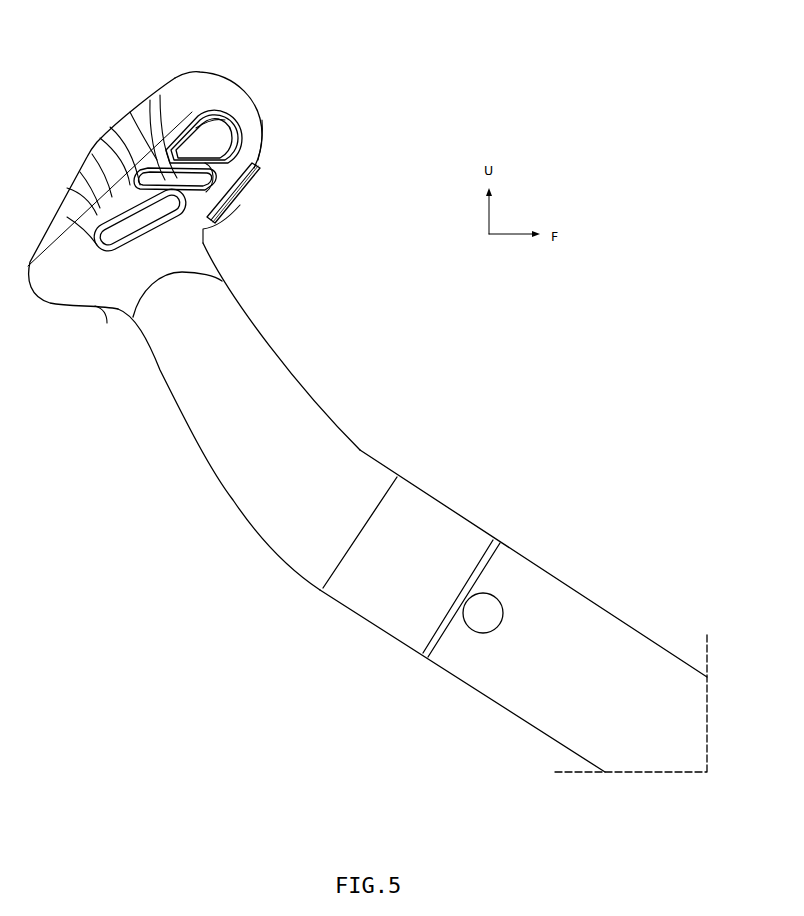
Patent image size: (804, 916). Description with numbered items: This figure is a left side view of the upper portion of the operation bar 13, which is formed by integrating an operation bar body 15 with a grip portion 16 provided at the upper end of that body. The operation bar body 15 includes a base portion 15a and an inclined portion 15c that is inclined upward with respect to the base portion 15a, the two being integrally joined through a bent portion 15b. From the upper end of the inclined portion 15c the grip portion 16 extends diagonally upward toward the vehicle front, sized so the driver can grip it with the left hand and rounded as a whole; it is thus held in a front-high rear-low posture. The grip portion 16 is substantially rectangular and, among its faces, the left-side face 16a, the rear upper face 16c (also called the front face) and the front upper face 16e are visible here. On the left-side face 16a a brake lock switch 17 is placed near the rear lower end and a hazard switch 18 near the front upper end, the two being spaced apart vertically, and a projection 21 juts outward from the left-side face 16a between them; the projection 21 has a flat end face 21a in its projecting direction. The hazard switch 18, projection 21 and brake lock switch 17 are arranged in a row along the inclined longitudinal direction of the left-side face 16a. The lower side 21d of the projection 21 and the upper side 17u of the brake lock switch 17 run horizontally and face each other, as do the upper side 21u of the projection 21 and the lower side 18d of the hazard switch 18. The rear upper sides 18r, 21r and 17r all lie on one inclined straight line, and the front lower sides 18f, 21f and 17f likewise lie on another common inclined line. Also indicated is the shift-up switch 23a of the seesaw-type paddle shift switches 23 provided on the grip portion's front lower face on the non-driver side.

The operation bar 13 is at (359, 389).
The operation bar body 15 is at (486, 706).
The base portion 15a is at (560, 580).
The bent portion 15b is at (340, 567).
The inclined portion 15c is at (280, 360).
The grip portion 16 is at (194, 58).
The left-side face 16a is at (67, 217).
The rear upper face 16c is at (110, 127).
The front upper face 16e is at (244, 85).
The brake lock switch 17 is at (100, 247).
The rear upper side 17r is at (67, 188).
The upper side 17u is at (130, 112).
The front lower side 17f is at (207, 247).
The hazard switch 18 is at (240, 130).
The rear upper side 18r is at (153, 92).
The lower side 18d is at (147, 100).
The front lower side 18f is at (262, 128).
The projection 21 is at (252, 160).
The upper side 21u is at (193, 153).
The end face 21a is at (108, 130).
The rear upper side 21r is at (92, 154).
The lower side 21d is at (80, 172).
The front lower side 21f is at (243, 194).
The paddle shift switch 23 is at (227, 212).
The shift-up switch 23a is at (269, 195).